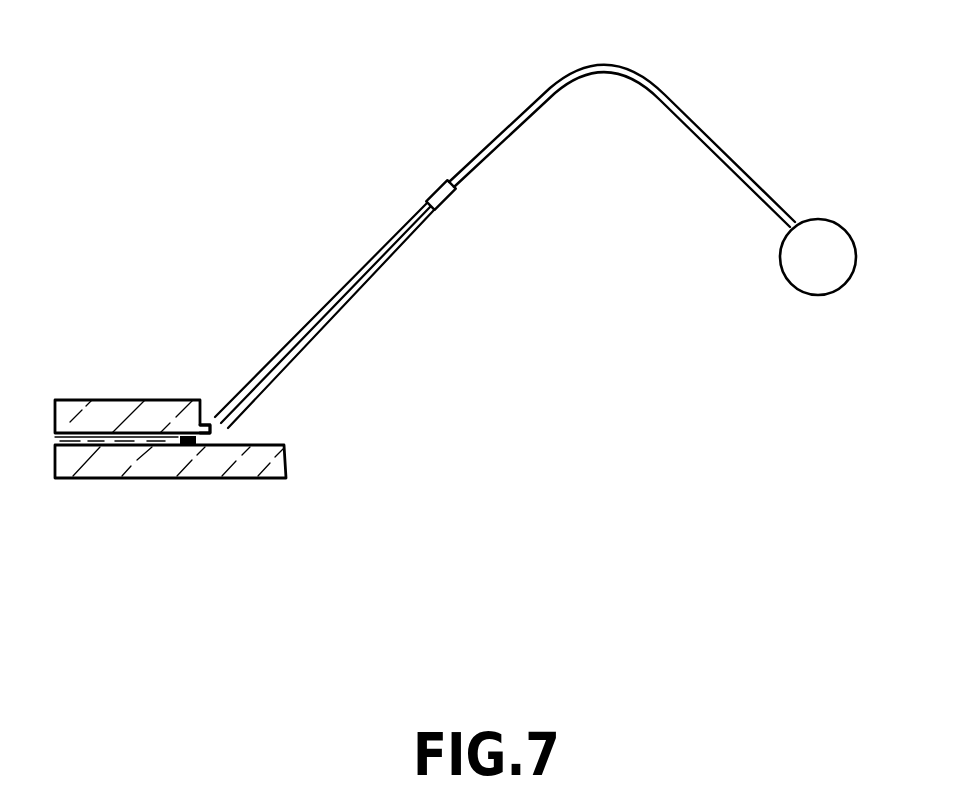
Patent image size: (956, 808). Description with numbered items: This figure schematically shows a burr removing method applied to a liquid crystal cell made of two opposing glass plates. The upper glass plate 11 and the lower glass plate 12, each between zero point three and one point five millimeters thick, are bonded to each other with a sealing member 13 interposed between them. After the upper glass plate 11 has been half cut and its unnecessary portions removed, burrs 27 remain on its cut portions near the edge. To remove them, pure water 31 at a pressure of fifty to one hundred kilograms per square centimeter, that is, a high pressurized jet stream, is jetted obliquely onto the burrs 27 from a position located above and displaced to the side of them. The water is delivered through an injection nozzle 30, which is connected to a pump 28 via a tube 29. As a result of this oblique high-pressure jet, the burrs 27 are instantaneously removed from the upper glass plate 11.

The upper glass plate 11 is at (121, 398).
The lower glass plate 12 is at (93, 481).
The sealing member 13 is at (183, 445).
The burr 27 is at (212, 432).
The pump 28 is at (820, 297).
The tube 29 is at (662, 91).
The injection nozzle 30 is at (445, 207).
The pure water 31 is at (335, 313).